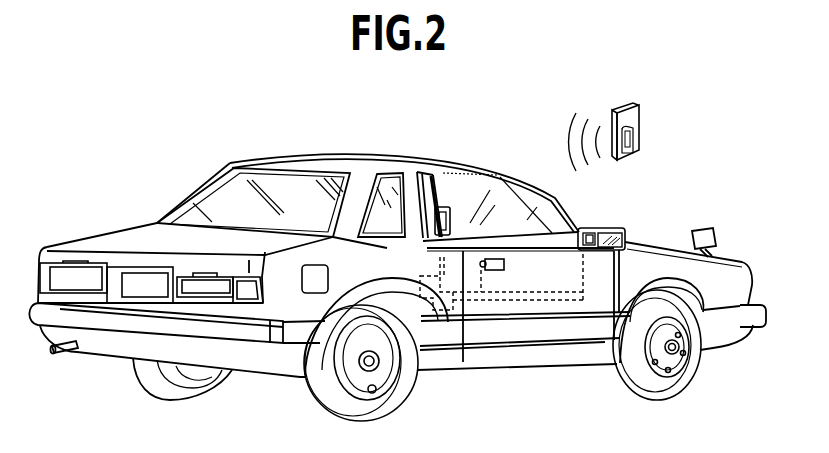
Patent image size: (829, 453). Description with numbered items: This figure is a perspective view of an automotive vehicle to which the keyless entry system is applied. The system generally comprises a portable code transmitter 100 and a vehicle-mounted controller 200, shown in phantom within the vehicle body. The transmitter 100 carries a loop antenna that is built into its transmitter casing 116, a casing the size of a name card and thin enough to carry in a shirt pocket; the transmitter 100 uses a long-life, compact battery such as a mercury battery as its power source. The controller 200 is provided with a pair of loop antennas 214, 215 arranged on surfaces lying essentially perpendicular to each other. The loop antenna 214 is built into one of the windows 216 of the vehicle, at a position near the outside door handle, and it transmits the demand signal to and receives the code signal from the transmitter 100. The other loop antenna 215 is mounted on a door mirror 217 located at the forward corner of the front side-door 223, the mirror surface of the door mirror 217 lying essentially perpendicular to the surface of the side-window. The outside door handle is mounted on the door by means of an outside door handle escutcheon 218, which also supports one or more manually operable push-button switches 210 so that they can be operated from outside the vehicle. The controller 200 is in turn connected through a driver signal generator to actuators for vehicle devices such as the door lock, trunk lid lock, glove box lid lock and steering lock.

The code transmitter 100 is at (640, 130).
The transmitter casing 116 is at (636, 117).
The controller 200 is at (428, 283).
The manually operable push-button switches 210 is at (483, 261).
The loop antenna 214 is at (446, 215).
The loop antenna 215 is at (590, 232).
The window 216 is at (432, 178).
The door mirror 217 is at (626, 232).
The outside door handle escutcheon 218 is at (500, 268).
The front side-door 223 is at (599, 301).